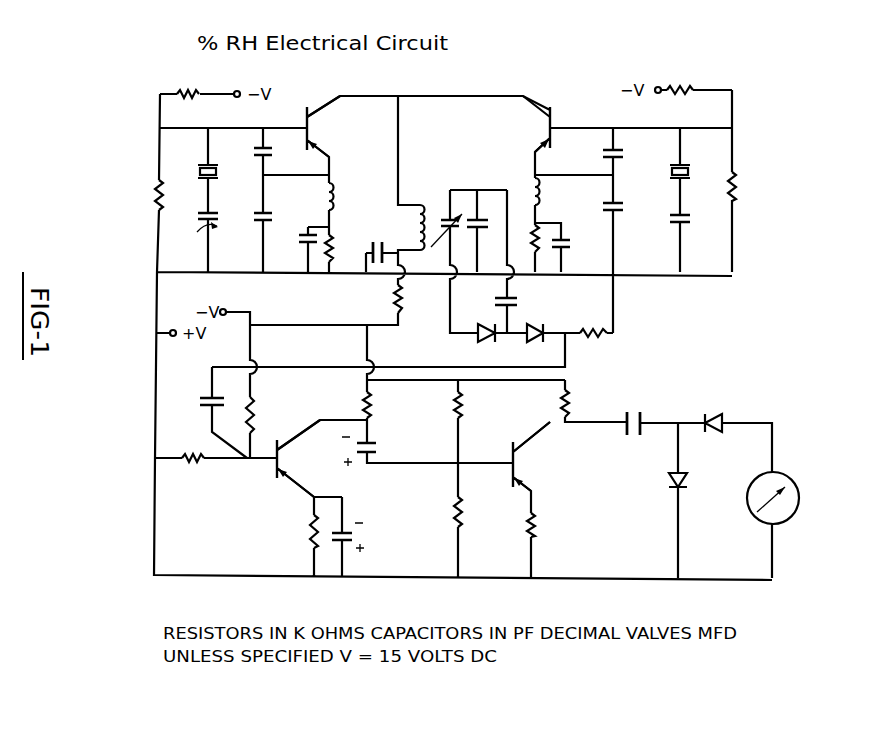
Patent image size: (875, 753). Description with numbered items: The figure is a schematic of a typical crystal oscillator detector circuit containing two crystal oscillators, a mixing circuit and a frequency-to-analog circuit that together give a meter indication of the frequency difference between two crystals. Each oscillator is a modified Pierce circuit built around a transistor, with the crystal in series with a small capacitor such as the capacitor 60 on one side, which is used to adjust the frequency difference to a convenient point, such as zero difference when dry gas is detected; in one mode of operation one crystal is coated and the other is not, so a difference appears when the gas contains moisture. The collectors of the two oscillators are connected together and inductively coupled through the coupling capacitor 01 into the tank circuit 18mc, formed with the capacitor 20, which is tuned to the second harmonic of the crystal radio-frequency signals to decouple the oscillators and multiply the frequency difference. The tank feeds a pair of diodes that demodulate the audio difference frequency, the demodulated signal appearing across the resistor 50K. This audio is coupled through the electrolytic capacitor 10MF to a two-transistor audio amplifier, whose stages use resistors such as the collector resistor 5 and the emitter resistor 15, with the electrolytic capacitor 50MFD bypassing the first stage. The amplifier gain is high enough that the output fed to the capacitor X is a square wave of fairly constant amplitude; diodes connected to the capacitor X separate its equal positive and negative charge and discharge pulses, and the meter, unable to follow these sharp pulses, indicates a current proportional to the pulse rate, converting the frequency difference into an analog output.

The .01 mfd coupling capacitor 01 is at (374, 243).
The 18 mc tuned circuit 18mc is at (442, 209).
The 20 pf capacitor 20 is at (484, 234).
The 60 pf capacitor 60 is at (691, 230).
The 50K resistor 50K is at (597, 347).
The 10 mfd electrolytic capacitor 10MF is at (382, 451).
The 15K resistor 15 is at (473, 512).
The 5K resistor 5 is at (574, 403).
The 50 mfd electrolytic capacitor 50MFD is at (378, 537).
The capacitor X is at (631, 434).